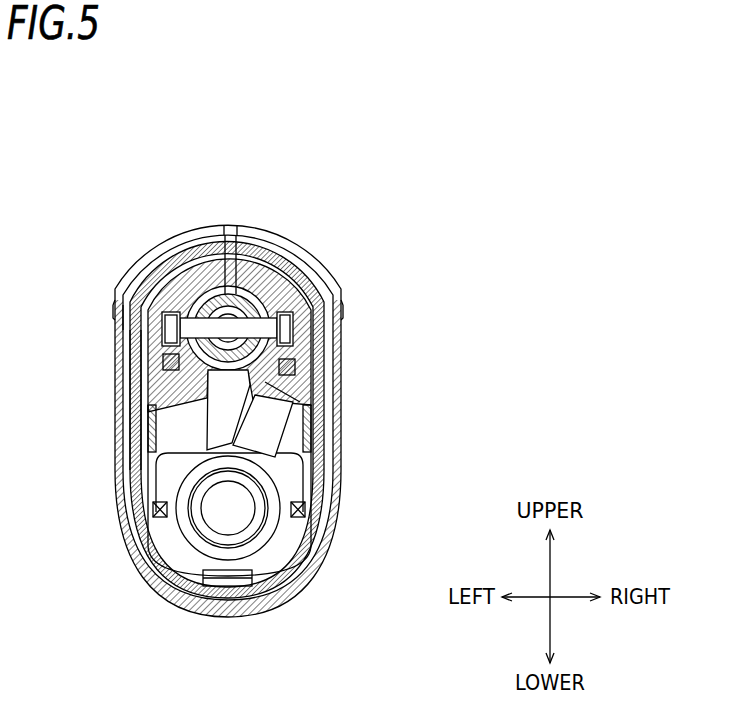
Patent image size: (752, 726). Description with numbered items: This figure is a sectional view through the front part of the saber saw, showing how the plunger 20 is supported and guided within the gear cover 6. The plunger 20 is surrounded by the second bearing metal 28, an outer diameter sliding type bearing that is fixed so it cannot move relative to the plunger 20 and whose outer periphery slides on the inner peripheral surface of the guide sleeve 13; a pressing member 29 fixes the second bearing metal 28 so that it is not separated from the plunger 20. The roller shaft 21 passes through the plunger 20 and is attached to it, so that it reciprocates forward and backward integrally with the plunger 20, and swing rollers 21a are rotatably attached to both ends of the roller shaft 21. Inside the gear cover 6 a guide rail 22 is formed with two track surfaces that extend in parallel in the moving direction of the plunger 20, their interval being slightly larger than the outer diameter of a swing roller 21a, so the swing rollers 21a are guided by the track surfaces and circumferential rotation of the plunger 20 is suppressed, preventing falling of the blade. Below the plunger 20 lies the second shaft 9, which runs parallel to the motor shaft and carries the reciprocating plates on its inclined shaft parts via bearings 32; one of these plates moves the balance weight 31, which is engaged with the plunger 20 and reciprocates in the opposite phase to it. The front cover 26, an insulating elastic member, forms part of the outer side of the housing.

The gear cover 6 is at (135, 382).
The second shaft 9 is at (218, 507).
The guide sleeve 13 is at (210, 287).
The plunger 20 is at (238, 295).
The roller shaft 21 is at (155, 312).
The swing roller 21a is at (322, 308).
The guide rail 22 is at (124, 305).
The front cover 26 is at (116, 430).
The second bearing metal 28 is at (226, 248).
The pressing member 29 is at (285, 255).
The balance weight 31 is at (303, 400).
The bearing 32 is at (162, 356).